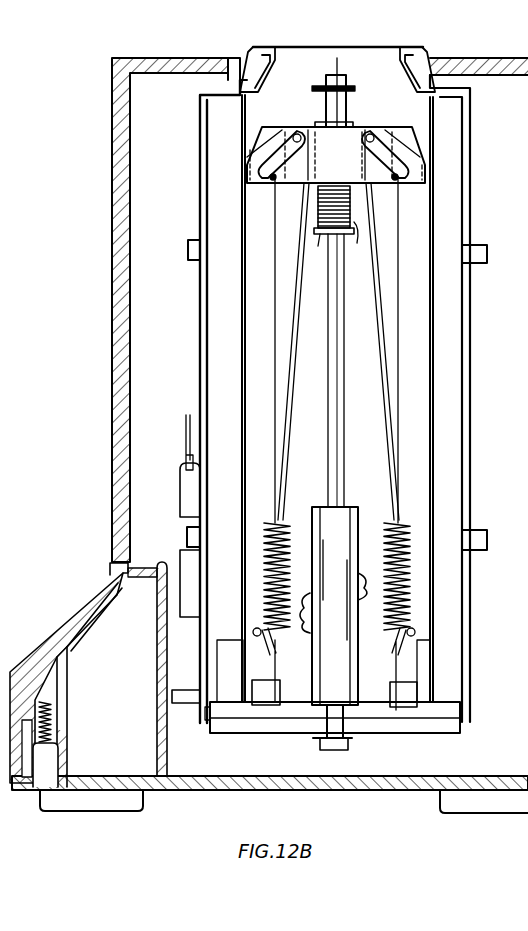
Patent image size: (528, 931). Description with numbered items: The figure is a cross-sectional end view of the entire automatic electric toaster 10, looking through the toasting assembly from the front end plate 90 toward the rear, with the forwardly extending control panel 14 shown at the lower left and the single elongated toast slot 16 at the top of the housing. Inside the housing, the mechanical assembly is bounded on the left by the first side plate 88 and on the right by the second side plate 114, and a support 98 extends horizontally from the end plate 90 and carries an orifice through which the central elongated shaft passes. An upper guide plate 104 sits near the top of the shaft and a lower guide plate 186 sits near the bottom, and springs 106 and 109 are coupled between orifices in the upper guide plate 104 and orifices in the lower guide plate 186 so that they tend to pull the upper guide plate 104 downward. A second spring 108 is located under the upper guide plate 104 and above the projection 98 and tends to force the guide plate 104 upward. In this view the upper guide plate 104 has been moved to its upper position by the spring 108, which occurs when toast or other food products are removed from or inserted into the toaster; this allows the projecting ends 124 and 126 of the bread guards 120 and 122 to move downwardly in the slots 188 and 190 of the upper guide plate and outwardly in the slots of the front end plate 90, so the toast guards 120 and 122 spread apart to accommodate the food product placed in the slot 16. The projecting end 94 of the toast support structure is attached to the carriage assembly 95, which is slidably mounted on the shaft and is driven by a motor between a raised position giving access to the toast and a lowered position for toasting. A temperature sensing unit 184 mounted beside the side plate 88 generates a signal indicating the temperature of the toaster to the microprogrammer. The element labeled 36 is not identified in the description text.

The automatic electric toaster 10 is at (93, 340).
The control panel 14 is at (78, 612).
The toast slot 16 is at (412, 48).
The shaft 36 is at (346, 428).
The first side plate 88 is at (204, 338).
The front end plate 90 is at (448, 420).
The projecting end 94 is at (296, 624).
The carriage assembly 95 is at (370, 588).
The support 98 is at (326, 238).
The upper guide plate 104 is at (372, 115).
The spring 106 is at (388, 530).
The second spring 108 is at (440, 203).
The spring 109 is at (292, 530).
The second side plate 114 is at (470, 345).
The toast guard 120 is at (378, 305).
The toast guard 122 is at (300, 291).
The projecting end 124 is at (365, 142).
The projecting end 126 is at (299, 132).
The temperature sensing unit 184 is at (186, 522).
The lower guide plate 186 is at (376, 700).
The slot 188 is at (388, 160).
The slot 190 is at (280, 165).